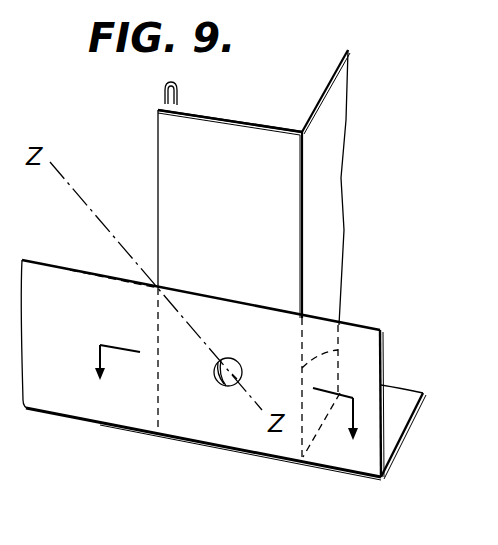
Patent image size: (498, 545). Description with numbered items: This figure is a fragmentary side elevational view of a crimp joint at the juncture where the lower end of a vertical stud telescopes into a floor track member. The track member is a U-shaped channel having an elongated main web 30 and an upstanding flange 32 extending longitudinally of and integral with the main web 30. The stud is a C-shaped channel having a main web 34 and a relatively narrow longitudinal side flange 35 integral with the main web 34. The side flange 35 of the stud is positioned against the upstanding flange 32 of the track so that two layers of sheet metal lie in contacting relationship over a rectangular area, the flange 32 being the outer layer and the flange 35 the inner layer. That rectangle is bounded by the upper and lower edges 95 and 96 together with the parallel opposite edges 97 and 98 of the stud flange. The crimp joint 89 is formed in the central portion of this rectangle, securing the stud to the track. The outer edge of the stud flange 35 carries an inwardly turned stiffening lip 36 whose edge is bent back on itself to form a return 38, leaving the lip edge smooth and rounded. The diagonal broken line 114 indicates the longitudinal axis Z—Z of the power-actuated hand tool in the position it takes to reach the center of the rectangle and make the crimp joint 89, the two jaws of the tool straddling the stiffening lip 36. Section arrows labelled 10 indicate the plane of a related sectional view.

The section line 10- 10 is at (118, 411).
The main web 30 is at (410, 423).
The upstanding flange 32 is at (384, 360).
The main web 34 is at (341, 178).
The side flange 35 is at (250, 186).
The stiffening lip 36 is at (163, 101).
The return 38 is at (178, 97).
The crimp joint 89 is at (244, 366).
The upper edge 95 is at (228, 302).
The lower edge 96 is at (222, 447).
The edge of side flange 97 is at (158, 313).
The edge of side flange 98 is at (338, 350).
The diagonal broken line 114 is at (113, 234).